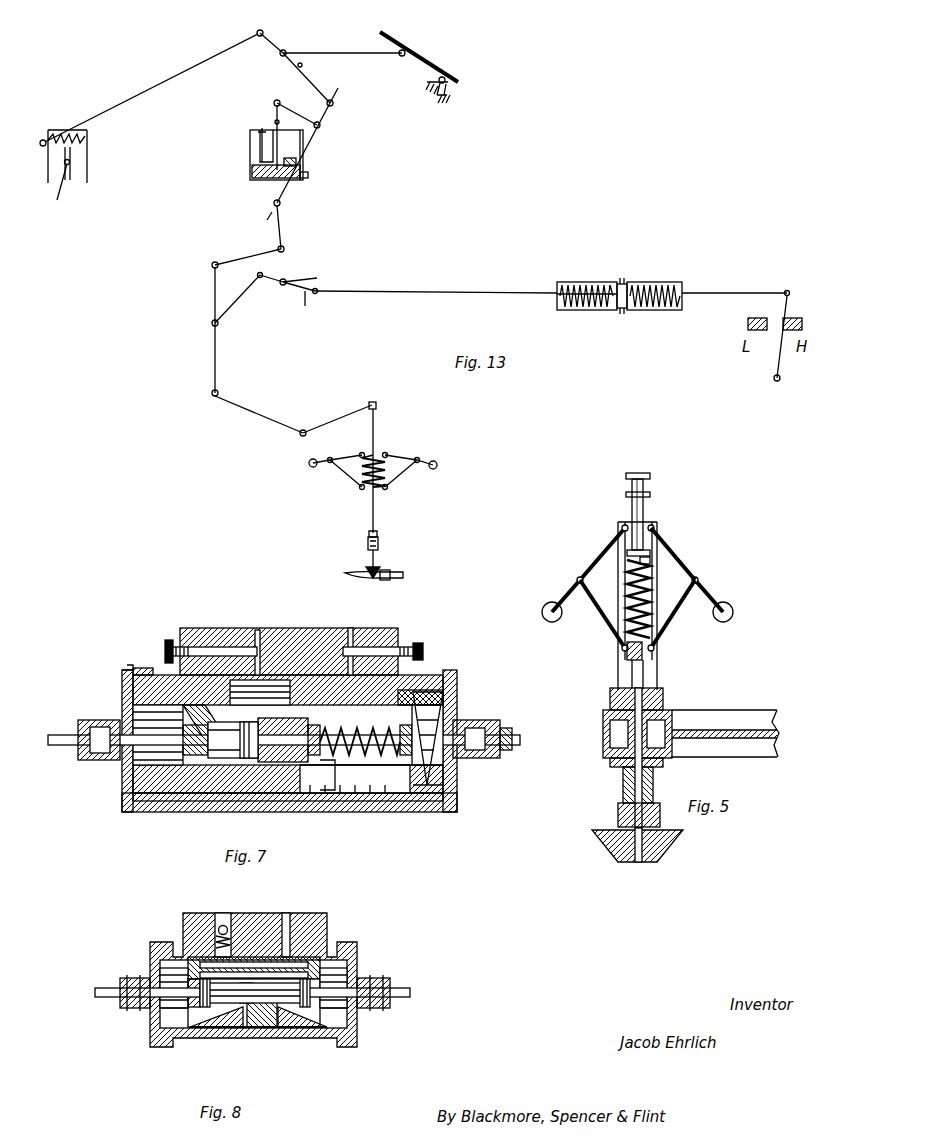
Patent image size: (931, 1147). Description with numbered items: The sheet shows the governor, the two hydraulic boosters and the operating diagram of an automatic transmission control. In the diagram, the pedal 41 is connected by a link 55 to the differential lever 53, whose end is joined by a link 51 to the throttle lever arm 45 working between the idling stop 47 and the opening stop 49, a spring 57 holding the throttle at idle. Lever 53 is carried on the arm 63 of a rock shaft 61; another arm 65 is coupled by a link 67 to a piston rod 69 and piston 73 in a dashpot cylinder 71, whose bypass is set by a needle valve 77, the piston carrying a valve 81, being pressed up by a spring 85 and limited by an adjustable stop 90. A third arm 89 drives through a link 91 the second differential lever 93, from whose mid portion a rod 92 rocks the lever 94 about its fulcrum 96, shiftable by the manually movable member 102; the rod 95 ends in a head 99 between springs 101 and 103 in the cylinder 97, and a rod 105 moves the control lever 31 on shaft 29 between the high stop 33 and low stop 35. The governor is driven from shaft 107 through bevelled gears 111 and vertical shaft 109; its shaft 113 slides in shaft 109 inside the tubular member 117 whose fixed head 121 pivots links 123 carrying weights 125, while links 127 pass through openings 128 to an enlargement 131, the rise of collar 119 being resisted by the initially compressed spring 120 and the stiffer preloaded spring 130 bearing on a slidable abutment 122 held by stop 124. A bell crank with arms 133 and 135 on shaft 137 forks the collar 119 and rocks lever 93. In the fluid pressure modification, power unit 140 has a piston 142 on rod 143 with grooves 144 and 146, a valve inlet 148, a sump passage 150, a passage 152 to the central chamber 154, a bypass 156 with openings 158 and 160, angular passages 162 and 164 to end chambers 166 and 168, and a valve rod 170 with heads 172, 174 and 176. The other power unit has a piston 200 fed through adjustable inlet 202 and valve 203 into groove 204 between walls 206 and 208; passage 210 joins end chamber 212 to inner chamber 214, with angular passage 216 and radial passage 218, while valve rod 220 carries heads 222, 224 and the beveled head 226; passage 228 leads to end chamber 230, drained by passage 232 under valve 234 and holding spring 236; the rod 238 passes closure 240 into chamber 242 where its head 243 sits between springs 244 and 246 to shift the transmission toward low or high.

In FIG. 13, the shaft 29 is at (773, 379).
In FIG. 13, the control lever 31 is at (780, 360).
In FIG. 13, the stop 33 is at (802, 322).
In FIG. 13, the stop 35 is at (746, 325).
In FIG. 13, the pedal 41 is at (430, 64).
In FIG. 13, the lever arm 45 is at (52, 133).
In FIG. 13, the stop 47 is at (72, 178).
In FIG. 13, the stop 49 is at (57, 189).
In FIG. 13, the link 51 is at (137, 95).
In FIG. 13, the differential lever 53 is at (263, 35).
In FIG. 13, the link 55 is at (358, 53).
In FIG. 13, the spring 57 is at (85, 134).
In FIG. 13, the rock shaft 61 is at (322, 124).
In FIG. 13, the arm 63 is at (333, 99).
In FIG. 13, the arm 65 is at (299, 115).
In FIG. 13, the link 67 is at (274, 105).
In FIG. 13, the piston rod 69 is at (301, 150).
In FIG. 13, the cylinder 71 is at (249, 143).
In FIG. 13, the piston 73 is at (258, 158).
In FIG. 13, the adjustable needle valve 77 is at (309, 177).
In FIG. 13, the valve 81 is at (296, 162).
In FIG. 13, the spring 85 is at (251, 179).
In FIG. 13, the arm 89 is at (282, 232).
In FIG. 13, the adjustable stop 90 is at (261, 131).
In FIG. 13, the link 91 is at (242, 258).
In FIG. 13, the rod 92 is at (245, 291).
In FIG. 13, the differential lever 93 is at (215, 352).
In FIG. 13, the lever 94 is at (300, 305).
In FIG. 13, the rod 95 is at (445, 291).
In FIG. 13, the fulcrum 96 is at (286, 280).
In FIG. 13, the cylinder 97 is at (590, 288).
In FIG. 13, the head 99 is at (626, 306).
In FIG. 13, the spring 101 is at (575, 300).
In FIG. 13, the manually movable member 102 is at (317, 278).
In FIG. 13, the spring 103 is at (657, 290).
In FIG. 13, the rod 105 is at (723, 292).
In FIG. 13, the shaft 107 is at (393, 576).
In FIG. 5, the vertical shaft 109 is at (622, 786).
In FIG. 13, the bevelled gears 111 is at (346, 576).
In FIG. 5, the bevelled gears 111 is at (606, 838).
In FIG. 13, the governor shaft 113 is at (373, 433).
In FIG. 5, the governor shaft 113 is at (644, 522).
In FIG. 5, the tubular member 117 is at (658, 690).
In FIG. 5, the collar 119 is at (626, 494).
In FIG. 13, the spring 120 is at (380, 470).
In FIG. 5, the spring 120 is at (626, 558).
In FIG. 7, the spring 120 is at (190, 802).
In FIG. 5, the fixed head 121 is at (656, 528).
In FIG. 5, the slidable abutment 122 is at (623, 550).
In FIG. 5, the links 123 is at (710, 592).
In FIG. 5, the stop 124 is at (652, 560).
In FIG. 5, the weights 125 is at (734, 612).
In FIG. 5, the links 127 is at (672, 622).
In FIG. 5, the openings 128 is at (655, 600).
In FIG. 13, the spring 130 is at (365, 483).
In FIG. 5, the spring 130 is at (636, 590).
In FIG. 5, the enlargement 131 is at (629, 656).
In FIG. 13, the bell crank arm 133 is at (342, 417).
In FIG. 13, the bell crank arm 135 is at (262, 416).
In FIG. 13, the shaft 137 is at (303, 430).
In FIG. 8, the power unit 140 is at (305, 1037).
In FIG. 8, the piston 142 is at (265, 1020).
In FIG. 8, the rod 143 is at (100, 988).
In FIG. 8, the annular groove 144 is at (200, 1030).
In FIG. 8, the annular groove 146 is at (300, 962).
In FIG. 8, the valve inlet 148 is at (226, 925).
In FIG. 8, the passage 150 is at (290, 918).
In FIG. 8, the passage 152 is at (245, 1000).
In FIG. 8, the central chamber 154 is at (238, 985).
In FIG. 8, the bypass 156 is at (217, 960).
In FIG. 8, the opening 158 is at (198, 958).
In FIG. 8, the opening 160 is at (337, 968).
In FIG. 8, the angular passage 162 is at (200, 1020).
In FIG. 8, the angular passage 164 is at (323, 1013).
In FIG. 8, the chamber 166 is at (160, 1012).
In FIG. 8, the chamber 168 is at (343, 1012).
In FIG. 8, the valve rod 170 is at (398, 988).
In FIG. 8, the head 172 is at (190, 972).
In FIG. 8, the head 174 is at (204, 1025).
In FIG. 8, the head 176 is at (302, 1005).
In FIG. 7, the piston 200 is at (178, 792).
In FIG. 7, the adjustable inlet 202 is at (258, 640).
In FIG. 7, the valve 203 is at (188, 645).
In FIG. 7, the annular groove 204 is at (288, 792).
In FIG. 7, the end wall 206 is at (232, 790).
In FIG. 7, the end wall 208 is at (314, 783).
In FIG. 7, the passage 210 is at (175, 772).
In FIG. 7, the end chamber 212 is at (125, 700).
In FIG. 7, the inner chamber 214 is at (275, 702).
In FIG. 7, the angular passage 216 is at (133, 670).
In FIG. 7, the radial passage 218 is at (232, 688).
In FIG. 7, the valve rod 220 is at (61, 735).
In FIG. 7, the head 222 is at (166, 748).
In FIG. 7, the head 224 is at (305, 728).
In FIG. 7, the intermediate head 226 is at (245, 762).
In FIG. 7, the passage 228 is at (340, 786).
In FIG. 7, the end chamber 230 is at (412, 685).
In FIG. 7, the passage 232 is at (351, 635).
In FIG. 7, the valve 234 is at (402, 648).
In FIG. 7, the spring 236 is at (430, 768).
In FIG. 7, the rod 238 is at (510, 750).
In FIG. 7, the closure 240 is at (418, 786).
In FIG. 7, the second inner chamber 242 is at (452, 672).
In FIG. 7, the head 243 is at (377, 783).
In FIG. 7, the spring 244 is at (447, 700).
In FIG. 7, the spring 246 is at (370, 782).